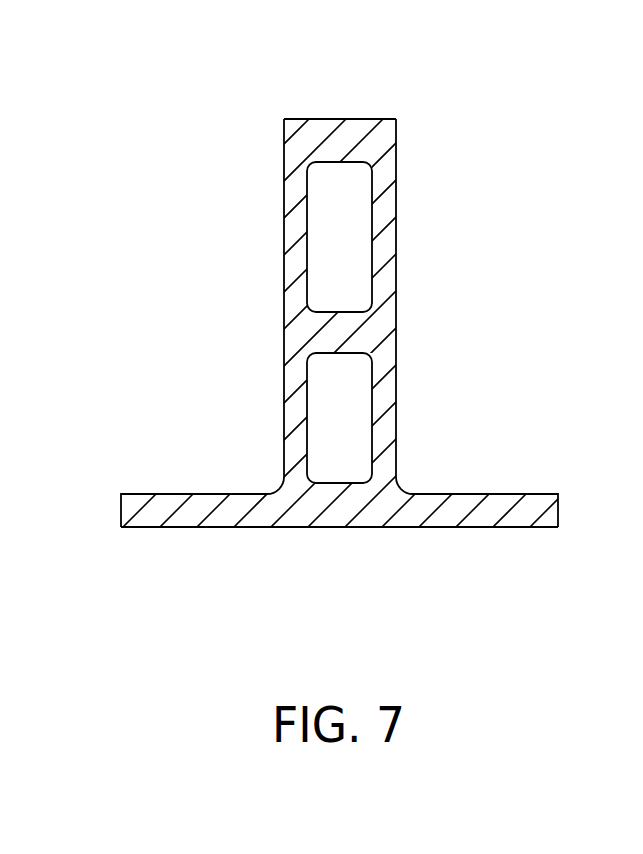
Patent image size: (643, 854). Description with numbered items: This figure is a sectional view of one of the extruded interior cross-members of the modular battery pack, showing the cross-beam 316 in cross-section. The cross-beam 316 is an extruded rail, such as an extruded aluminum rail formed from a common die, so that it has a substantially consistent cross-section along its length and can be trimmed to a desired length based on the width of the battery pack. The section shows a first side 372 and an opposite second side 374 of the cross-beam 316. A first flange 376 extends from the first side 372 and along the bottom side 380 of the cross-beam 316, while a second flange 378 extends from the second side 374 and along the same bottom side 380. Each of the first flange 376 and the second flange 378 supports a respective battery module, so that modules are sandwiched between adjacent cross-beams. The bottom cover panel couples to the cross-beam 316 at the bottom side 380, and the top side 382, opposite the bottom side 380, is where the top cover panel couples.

The cross-beam 316 is at (233, 64).
The top side 382 is at (373, 118).
The first side 372 is at (283, 268).
The second side 374 is at (388, 175).
The first flange 376 is at (135, 494).
The second flange 378 is at (505, 494).
The bottom side 380 is at (527, 527).